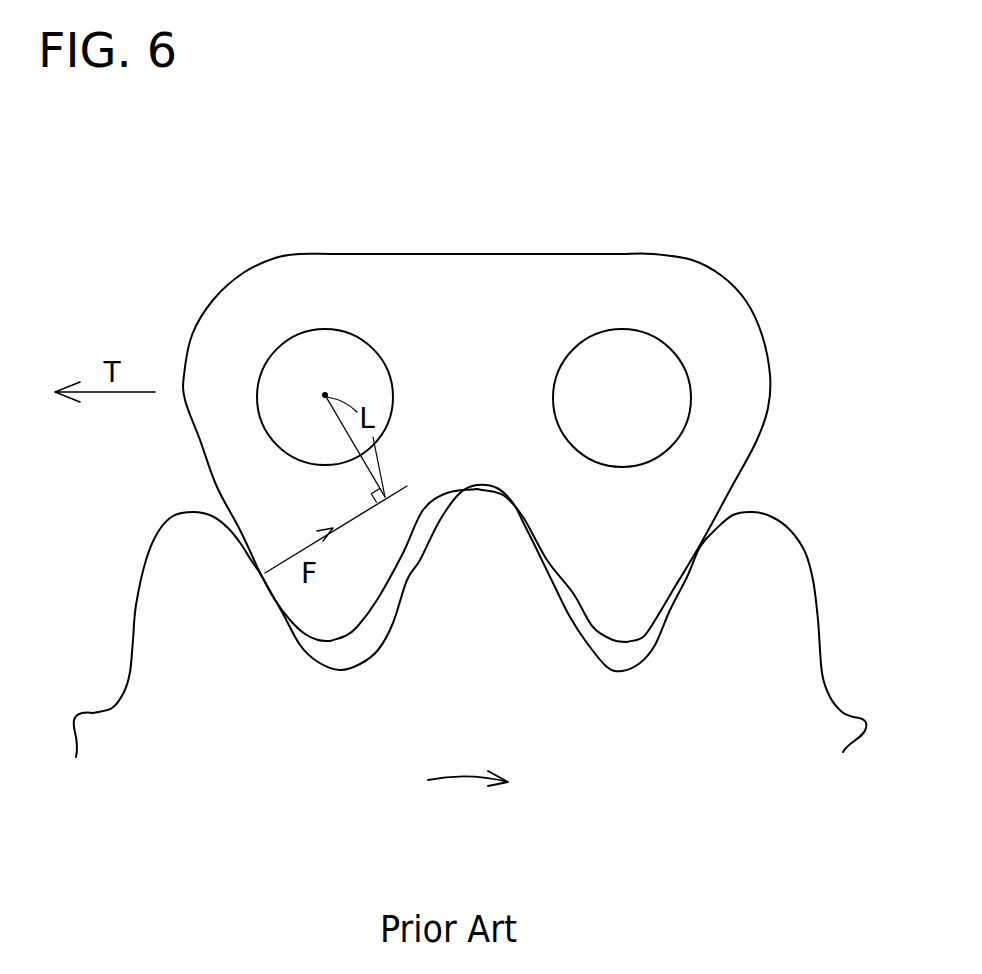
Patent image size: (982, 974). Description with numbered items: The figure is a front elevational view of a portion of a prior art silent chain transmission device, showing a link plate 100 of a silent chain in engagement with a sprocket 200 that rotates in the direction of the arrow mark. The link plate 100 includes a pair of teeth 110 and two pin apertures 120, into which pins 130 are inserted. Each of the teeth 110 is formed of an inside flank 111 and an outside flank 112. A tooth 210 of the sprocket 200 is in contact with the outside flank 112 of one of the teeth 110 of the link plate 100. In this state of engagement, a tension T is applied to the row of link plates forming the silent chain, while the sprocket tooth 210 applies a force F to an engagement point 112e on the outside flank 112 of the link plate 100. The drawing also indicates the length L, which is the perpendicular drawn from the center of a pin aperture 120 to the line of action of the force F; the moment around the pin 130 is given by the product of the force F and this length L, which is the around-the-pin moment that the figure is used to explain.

The link plate 100 is at (476, 453).
The teeth 110 is at (472, 616).
The inside flank 111 is at (573, 593).
The outside flank 112 is at (675, 590).
The engagement point 112e is at (261, 603).
The pin apertures 120 is at (584, 347).
The pins 130 is at (474, 410).
The sprocket 200 is at (470, 611).
The tooth 210 is at (175, 532).